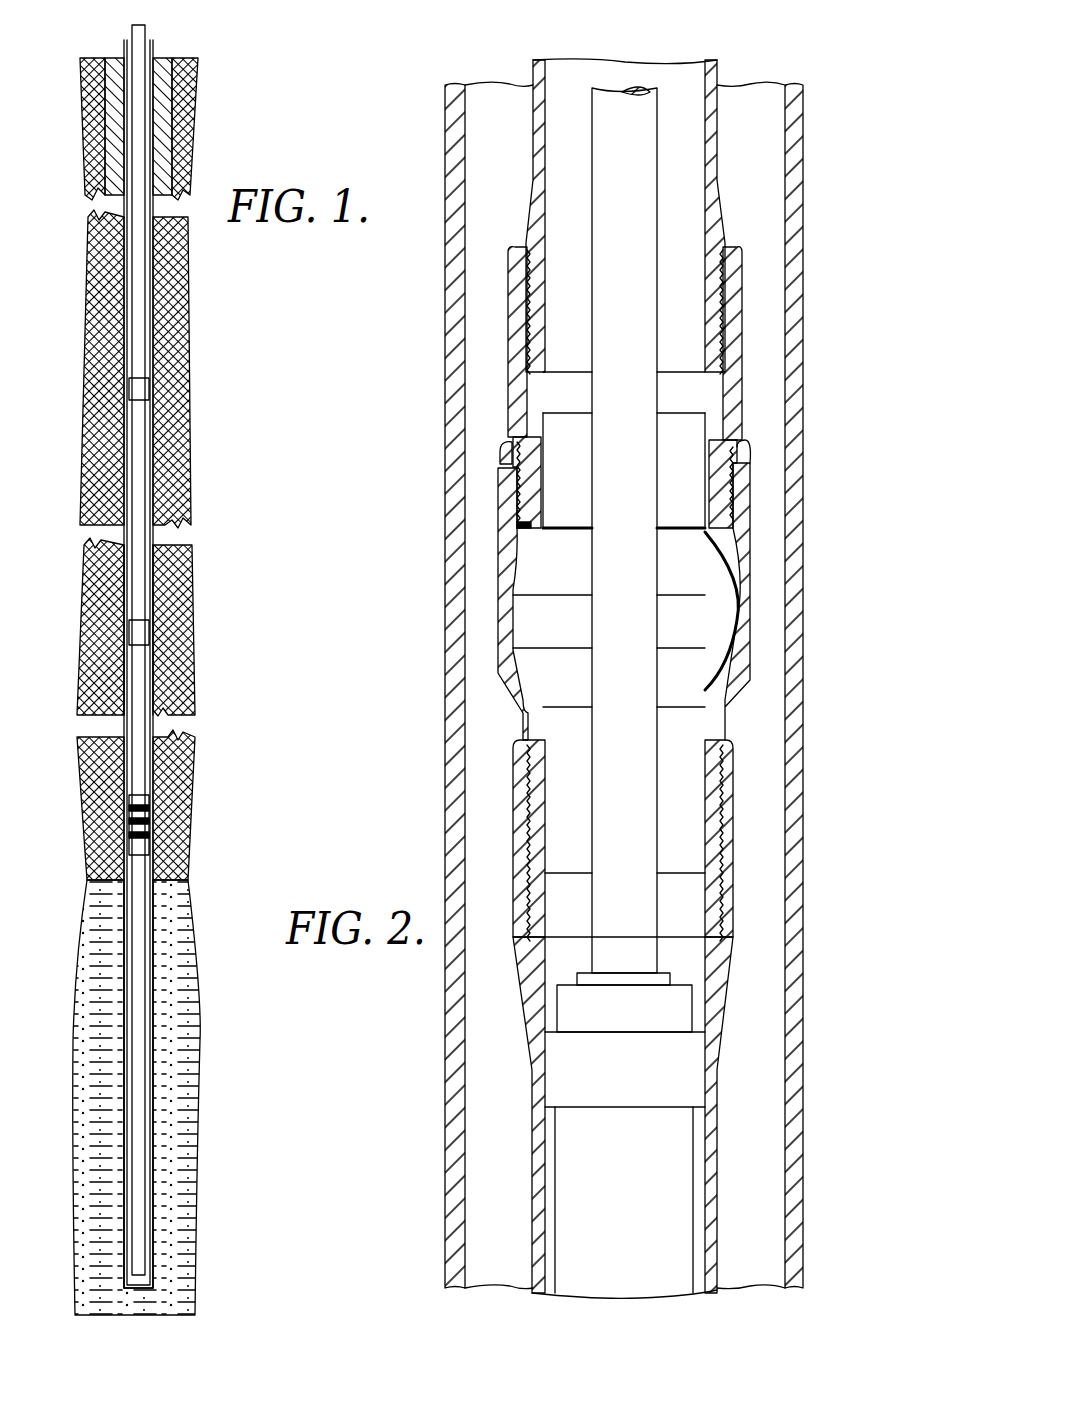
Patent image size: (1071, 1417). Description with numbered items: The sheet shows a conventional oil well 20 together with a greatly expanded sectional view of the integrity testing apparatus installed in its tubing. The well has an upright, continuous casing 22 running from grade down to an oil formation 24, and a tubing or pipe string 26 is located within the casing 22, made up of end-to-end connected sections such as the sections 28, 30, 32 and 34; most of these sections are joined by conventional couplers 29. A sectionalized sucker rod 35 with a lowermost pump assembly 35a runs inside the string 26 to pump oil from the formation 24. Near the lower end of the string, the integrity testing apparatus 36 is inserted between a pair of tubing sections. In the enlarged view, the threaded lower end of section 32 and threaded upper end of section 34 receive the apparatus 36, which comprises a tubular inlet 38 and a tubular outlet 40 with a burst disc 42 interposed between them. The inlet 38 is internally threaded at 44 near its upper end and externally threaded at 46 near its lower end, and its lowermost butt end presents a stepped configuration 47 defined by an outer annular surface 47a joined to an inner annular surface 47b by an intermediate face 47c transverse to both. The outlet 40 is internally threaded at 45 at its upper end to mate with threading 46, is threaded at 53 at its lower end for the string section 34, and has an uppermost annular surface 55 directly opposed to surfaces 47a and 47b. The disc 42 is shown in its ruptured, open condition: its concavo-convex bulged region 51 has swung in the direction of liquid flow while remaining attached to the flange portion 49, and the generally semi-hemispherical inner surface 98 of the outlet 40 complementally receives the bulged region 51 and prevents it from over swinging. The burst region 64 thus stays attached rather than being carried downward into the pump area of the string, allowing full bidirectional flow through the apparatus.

In FIG. 1, the oil well 20 is at (222, 63).
In FIG. 1, the casing 22 is at (118, 278).
In FIG. 2, the casing 22 is at (455, 172).
In FIG. 1, the oil formation 24 is at (208, 1111).
In FIG. 2, the tubing string 26 is at (725, 140).
In FIG. 1, the tubing section 28 is at (140, 118).
In FIG. 1, the couplers 29 is at (140, 385).
In FIG. 1, the tubing section 30 is at (138, 495).
In FIG. 1, the tubing section 32 is at (130, 672).
In FIG. 2, the tubing section 32 is at (720, 72).
In FIG. 1, the tubing section 34 is at (140, 1005).
In FIG. 2, the tubing section 34 is at (712, 1172).
In FIG. 2, the sucker rod 35 is at (612, 92).
In FIG. 2, the pump assembly 35a is at (560, 1212).
In FIG. 1, the integrity testing apparatus 36 is at (152, 808).
In FIG. 2, the integrity testing apparatus 36 is at (500, 690).
In FIG. 2, the tubular inlet 38 is at (740, 312).
In FIG. 2, the tubular outlet 40 is at (505, 592).
In FIG. 2, the burst disc 42 is at (672, 522).
In FIG. 2, the internal threading 44 is at (722, 278).
In FIG. 2, the internal threading 45 is at (500, 452).
In FIG. 2, the external threading 46 is at (748, 452).
In FIG. 2, the stepped configuration 47 is at (530, 515).
In FIG. 2, the outer annular surface 47a is at (510, 512).
In FIG. 2, the inner annular surface 47b is at (530, 530).
In FIG. 2, the intermediate face 47c is at (528, 540).
In FIG. 2, the flange portion 49 is at (728, 512).
In FIG. 2, the bulged region 51 is at (707, 660).
In FIG. 2, the threading 53 is at (735, 835).
In FIG. 2, the annular surface 55 is at (722, 535).
In FIG. 2, the burst region 64 is at (738, 607).
In FIG. 2, the inner surface 98 is at (525, 685).